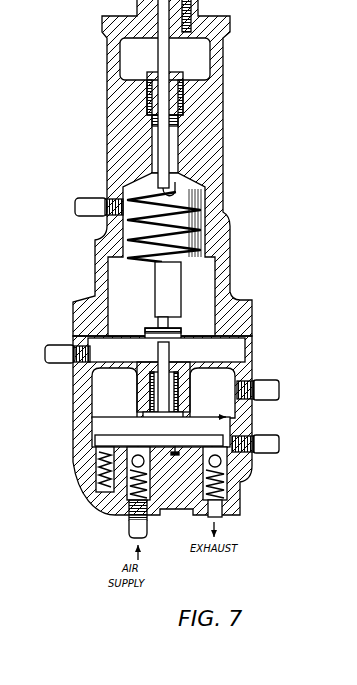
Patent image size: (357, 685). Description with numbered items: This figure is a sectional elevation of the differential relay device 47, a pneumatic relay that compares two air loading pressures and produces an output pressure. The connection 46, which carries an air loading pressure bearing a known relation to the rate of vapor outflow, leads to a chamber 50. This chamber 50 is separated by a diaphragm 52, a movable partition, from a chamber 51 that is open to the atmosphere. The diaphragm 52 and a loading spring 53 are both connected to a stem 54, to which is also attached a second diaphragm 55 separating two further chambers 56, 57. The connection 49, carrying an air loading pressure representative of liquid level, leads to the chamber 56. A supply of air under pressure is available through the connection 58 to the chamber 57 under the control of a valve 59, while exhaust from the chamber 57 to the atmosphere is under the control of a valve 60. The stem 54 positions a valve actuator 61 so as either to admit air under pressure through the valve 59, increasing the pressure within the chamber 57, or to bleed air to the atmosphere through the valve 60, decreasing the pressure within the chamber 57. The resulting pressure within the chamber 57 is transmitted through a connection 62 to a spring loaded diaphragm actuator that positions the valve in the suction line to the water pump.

The connection 46 is at (90, 196).
The differential relay device 47 is at (229, 82).
The connection 49 is at (265, 380).
The chamber 50 is at (171, 302).
The chamber 51 is at (166, 350).
The diaphragm 52 is at (86, 352).
The loading spring 53 is at (232, 213).
The stem 54 is at (186, 397).
The diaphragm 55 is at (96, 416).
The chamber 56 is at (114, 393).
The chamber 57 is at (159, 438).
The connection 58 is at (127, 525).
The valve 59 is at (124, 460).
The valve 60 is at (240, 474).
The valve actuator 61 is at (90, 441).
The connection 62 is at (272, 430).